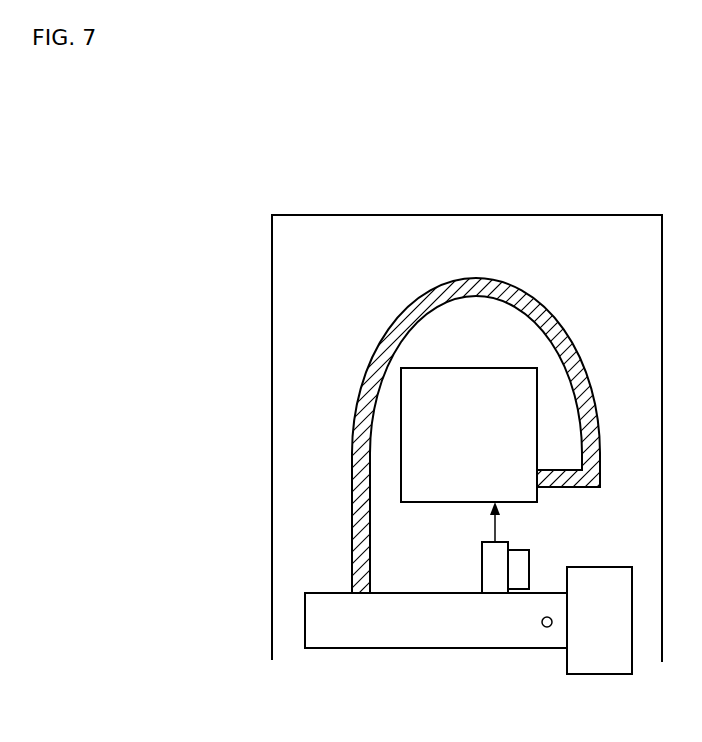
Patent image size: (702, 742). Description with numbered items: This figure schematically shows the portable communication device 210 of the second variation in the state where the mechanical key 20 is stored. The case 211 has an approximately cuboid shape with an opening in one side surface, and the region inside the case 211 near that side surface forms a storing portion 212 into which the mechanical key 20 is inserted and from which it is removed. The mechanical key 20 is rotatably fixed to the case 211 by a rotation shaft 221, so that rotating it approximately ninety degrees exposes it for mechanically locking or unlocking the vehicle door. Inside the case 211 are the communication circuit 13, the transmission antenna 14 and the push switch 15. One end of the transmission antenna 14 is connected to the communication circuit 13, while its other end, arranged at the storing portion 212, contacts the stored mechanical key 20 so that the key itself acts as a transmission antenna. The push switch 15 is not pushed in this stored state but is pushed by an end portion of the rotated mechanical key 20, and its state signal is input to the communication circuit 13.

The portable communication device 210 is at (335, 188).
The case 211 is at (271, 306).
The storing portion 212 is at (272, 640).
The transmission antenna 14 is at (534, 302).
The communication circuit 13 is at (478, 368).
The push switch 15 is at (481, 567).
The mechanical key 20 is at (437, 640).
The rotation shaft 221 is at (546, 630).